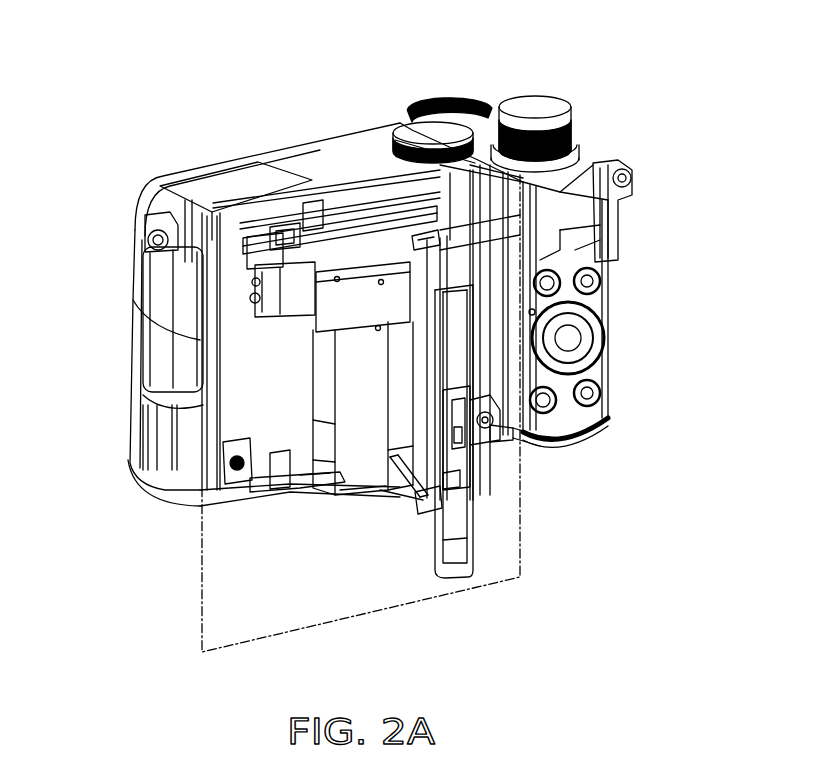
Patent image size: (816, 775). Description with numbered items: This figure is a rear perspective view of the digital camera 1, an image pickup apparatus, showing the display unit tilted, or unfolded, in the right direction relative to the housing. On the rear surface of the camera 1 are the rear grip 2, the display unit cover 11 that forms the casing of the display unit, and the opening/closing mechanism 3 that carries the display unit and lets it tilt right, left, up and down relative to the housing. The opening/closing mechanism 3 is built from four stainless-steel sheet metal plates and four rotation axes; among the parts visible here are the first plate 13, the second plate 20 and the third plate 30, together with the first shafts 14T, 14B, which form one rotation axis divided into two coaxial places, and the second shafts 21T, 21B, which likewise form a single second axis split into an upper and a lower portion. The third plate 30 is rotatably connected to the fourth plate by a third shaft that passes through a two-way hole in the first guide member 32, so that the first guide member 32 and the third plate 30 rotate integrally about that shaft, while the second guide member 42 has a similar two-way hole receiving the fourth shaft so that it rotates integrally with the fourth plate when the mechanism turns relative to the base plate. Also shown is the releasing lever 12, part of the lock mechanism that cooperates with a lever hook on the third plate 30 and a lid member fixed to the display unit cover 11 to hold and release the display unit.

The digital camera 1 is at (683, 93).
The rear grip 2 is at (573, 217).
The opening/closing mechanism 3 is at (487, 583).
The display unit cover 11 is at (455, 533).
The releasing lever 12 is at (463, 435).
The first plate 13 is at (432, 497).
The first shaft 14T is at (423, 240).
The first shaft 14B is at (430, 497).
The second plate 20 is at (360, 468).
The second shaft 21T is at (290, 230).
The second shaft 21B is at (360, 469).
The third plate 30 is at (270, 420).
The first guide member 32 is at (560, 203).
The second guide member 42 is at (513, 433).